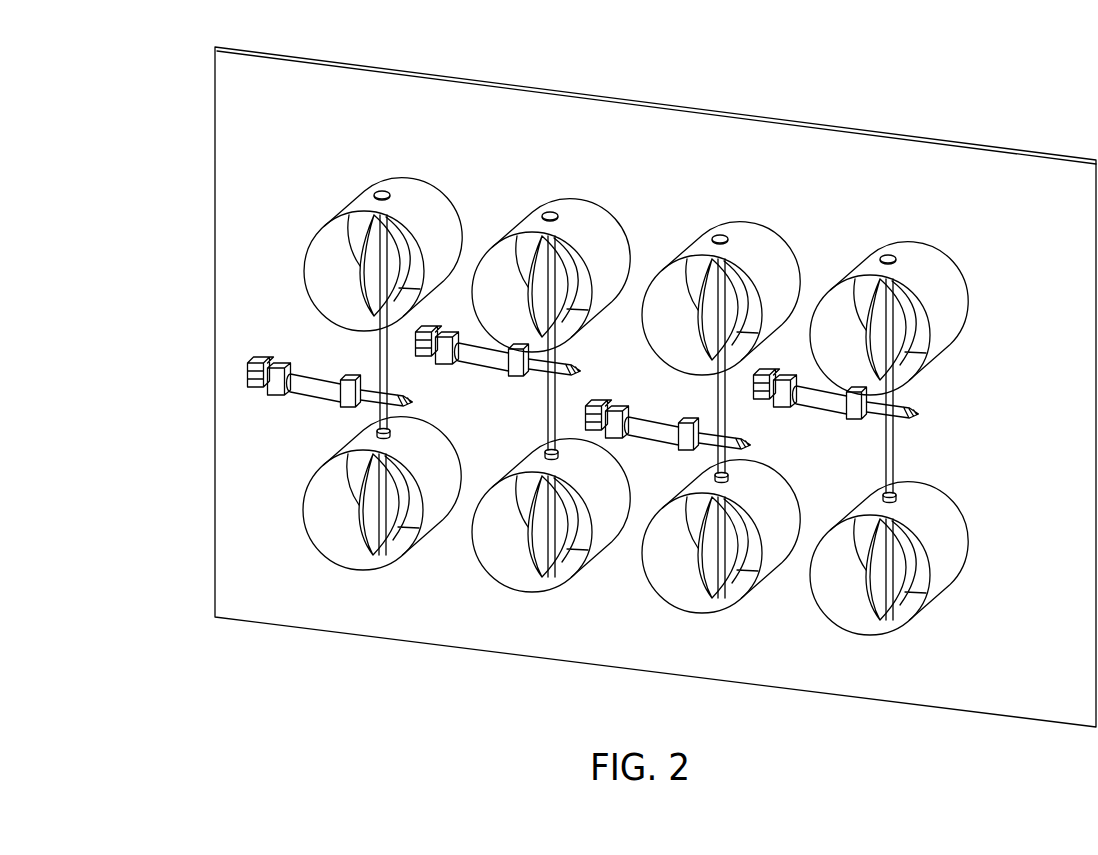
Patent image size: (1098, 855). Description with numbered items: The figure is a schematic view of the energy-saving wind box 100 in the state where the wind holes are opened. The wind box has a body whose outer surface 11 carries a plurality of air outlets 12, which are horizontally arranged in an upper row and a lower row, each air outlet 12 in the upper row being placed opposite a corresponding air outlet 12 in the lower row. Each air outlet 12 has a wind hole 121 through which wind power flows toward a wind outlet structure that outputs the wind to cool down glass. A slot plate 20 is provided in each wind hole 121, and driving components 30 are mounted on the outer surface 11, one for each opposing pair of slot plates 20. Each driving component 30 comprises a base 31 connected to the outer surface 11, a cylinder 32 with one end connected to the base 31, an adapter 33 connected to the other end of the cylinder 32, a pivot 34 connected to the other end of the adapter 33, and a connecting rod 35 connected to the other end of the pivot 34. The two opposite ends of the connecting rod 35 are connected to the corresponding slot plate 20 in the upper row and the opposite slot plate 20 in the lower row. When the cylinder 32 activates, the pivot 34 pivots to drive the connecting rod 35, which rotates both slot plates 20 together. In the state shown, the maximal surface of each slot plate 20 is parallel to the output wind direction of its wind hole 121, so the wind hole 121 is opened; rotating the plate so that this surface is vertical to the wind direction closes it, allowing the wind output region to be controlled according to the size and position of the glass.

The energy-saving wind box 100 is at (976, 109).
The outer surface 11 is at (225, 108).
The air outlet 12 is at (408, 195).
The wind hole 121 is at (317, 257).
The slot plate 20 is at (345, 289).
The driving component 30 is at (233, 400).
The base 31 is at (250, 358).
The cylinder 32 is at (309, 398).
The adapter 33 is at (355, 412).
The pivot 34 is at (412, 401).
The connecting rod 35 is at (378, 350).